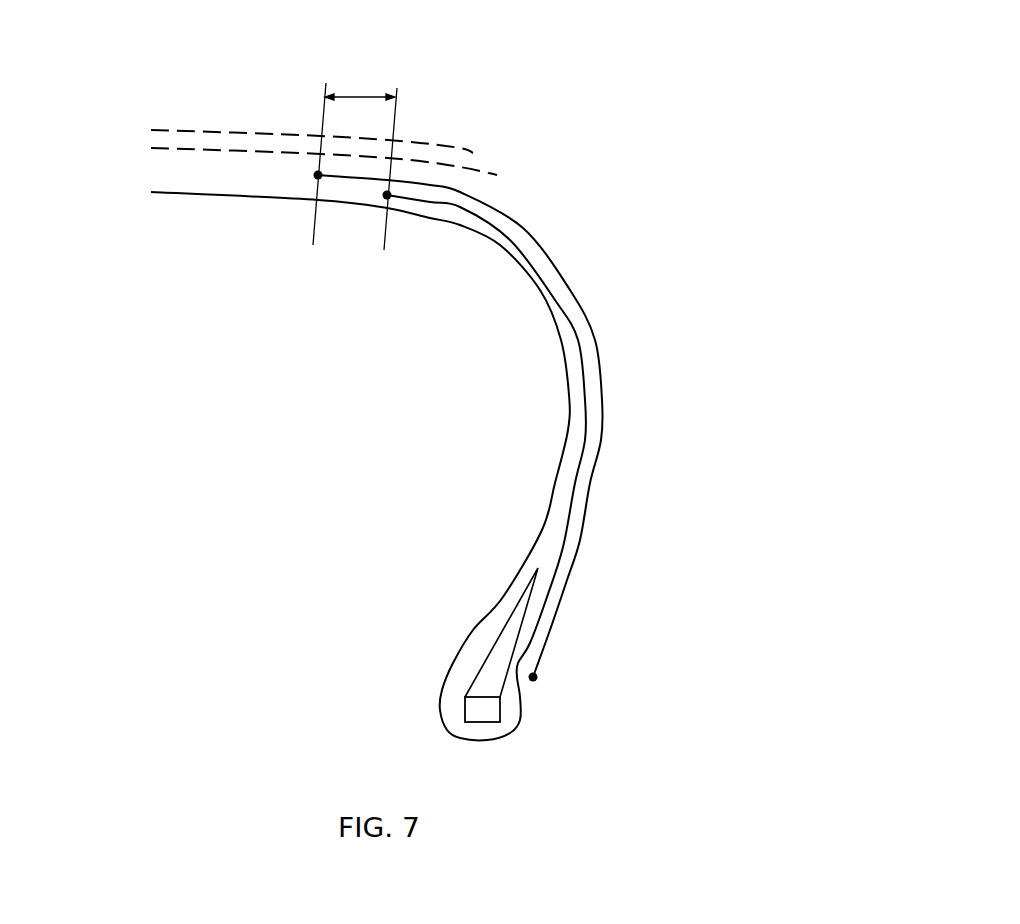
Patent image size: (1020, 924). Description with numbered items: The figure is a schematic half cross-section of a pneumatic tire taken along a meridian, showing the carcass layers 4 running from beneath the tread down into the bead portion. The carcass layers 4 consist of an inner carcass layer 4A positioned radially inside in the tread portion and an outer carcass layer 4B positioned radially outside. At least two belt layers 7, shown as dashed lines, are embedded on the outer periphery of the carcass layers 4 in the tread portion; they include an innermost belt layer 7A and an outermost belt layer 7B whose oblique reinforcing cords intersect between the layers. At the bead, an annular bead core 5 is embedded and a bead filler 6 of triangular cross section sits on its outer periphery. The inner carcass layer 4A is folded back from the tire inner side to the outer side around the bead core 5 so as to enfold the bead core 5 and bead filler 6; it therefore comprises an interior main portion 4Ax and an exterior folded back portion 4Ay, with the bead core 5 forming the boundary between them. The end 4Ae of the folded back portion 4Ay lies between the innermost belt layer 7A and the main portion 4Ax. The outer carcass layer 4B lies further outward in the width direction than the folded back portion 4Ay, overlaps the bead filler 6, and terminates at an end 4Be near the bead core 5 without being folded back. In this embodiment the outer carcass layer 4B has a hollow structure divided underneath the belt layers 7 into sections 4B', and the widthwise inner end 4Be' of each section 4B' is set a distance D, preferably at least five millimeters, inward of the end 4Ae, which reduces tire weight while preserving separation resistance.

The carcass layers 4 is at (437, 456).
The inner carcass layer 4A is at (562, 340).
The outer carcass layer 4B is at (488, 436).
The section of the outer carcass layer 4B' is at (583, 207).
The end of the folded back portion 4Ae is at (387, 195).
The end of the outer carcass layer 4Be is at (586, 686).
The inner end of the section of the outer carcass layer 4Be' is at (308, 247).
The main portion 4Ax is at (555, 485).
The folded back portion 4Ay is at (590, 485).
The bead core 5 is at (490, 710).
The bead filler 6 is at (502, 647).
The belt layers 7 is at (323, 224).
The innermost belt layer 7A is at (178, 152).
The outermost belt layer 7B is at (237, 132).
The distance D is at (355, 156).